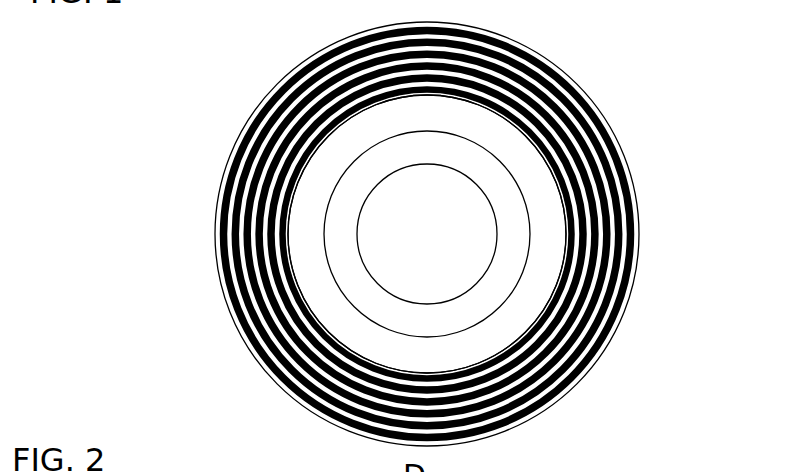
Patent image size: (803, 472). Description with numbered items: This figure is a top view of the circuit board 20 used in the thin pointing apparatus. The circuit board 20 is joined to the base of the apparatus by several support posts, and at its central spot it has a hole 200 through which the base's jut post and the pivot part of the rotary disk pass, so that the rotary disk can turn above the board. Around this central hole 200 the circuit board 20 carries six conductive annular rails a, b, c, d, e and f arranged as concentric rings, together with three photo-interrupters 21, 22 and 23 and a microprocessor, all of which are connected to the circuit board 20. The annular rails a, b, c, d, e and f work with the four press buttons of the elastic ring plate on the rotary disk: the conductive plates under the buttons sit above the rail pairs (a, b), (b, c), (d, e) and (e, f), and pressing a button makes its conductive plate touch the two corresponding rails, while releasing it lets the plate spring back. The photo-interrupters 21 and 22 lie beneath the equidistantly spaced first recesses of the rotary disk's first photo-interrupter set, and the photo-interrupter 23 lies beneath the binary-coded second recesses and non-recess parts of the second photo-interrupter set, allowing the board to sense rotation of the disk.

The circuit board 20 is at (250, 86).
The hole 200 is at (405, 208).
The photo-interrupter 21 is at (309, 229).
The photo-interrupter 22 is at (430, 101).
The photo-interrupter 23 is at (333, 231).
The conductive annular rail a is at (598, 106).
The conductive annular rail b is at (615, 137).
The conductive annular rail c is at (628, 172).
The conductive annular rail d is at (635, 217).
The conductive annular rail e is at (637, 255).
The conductive annular rail f is at (630, 292).